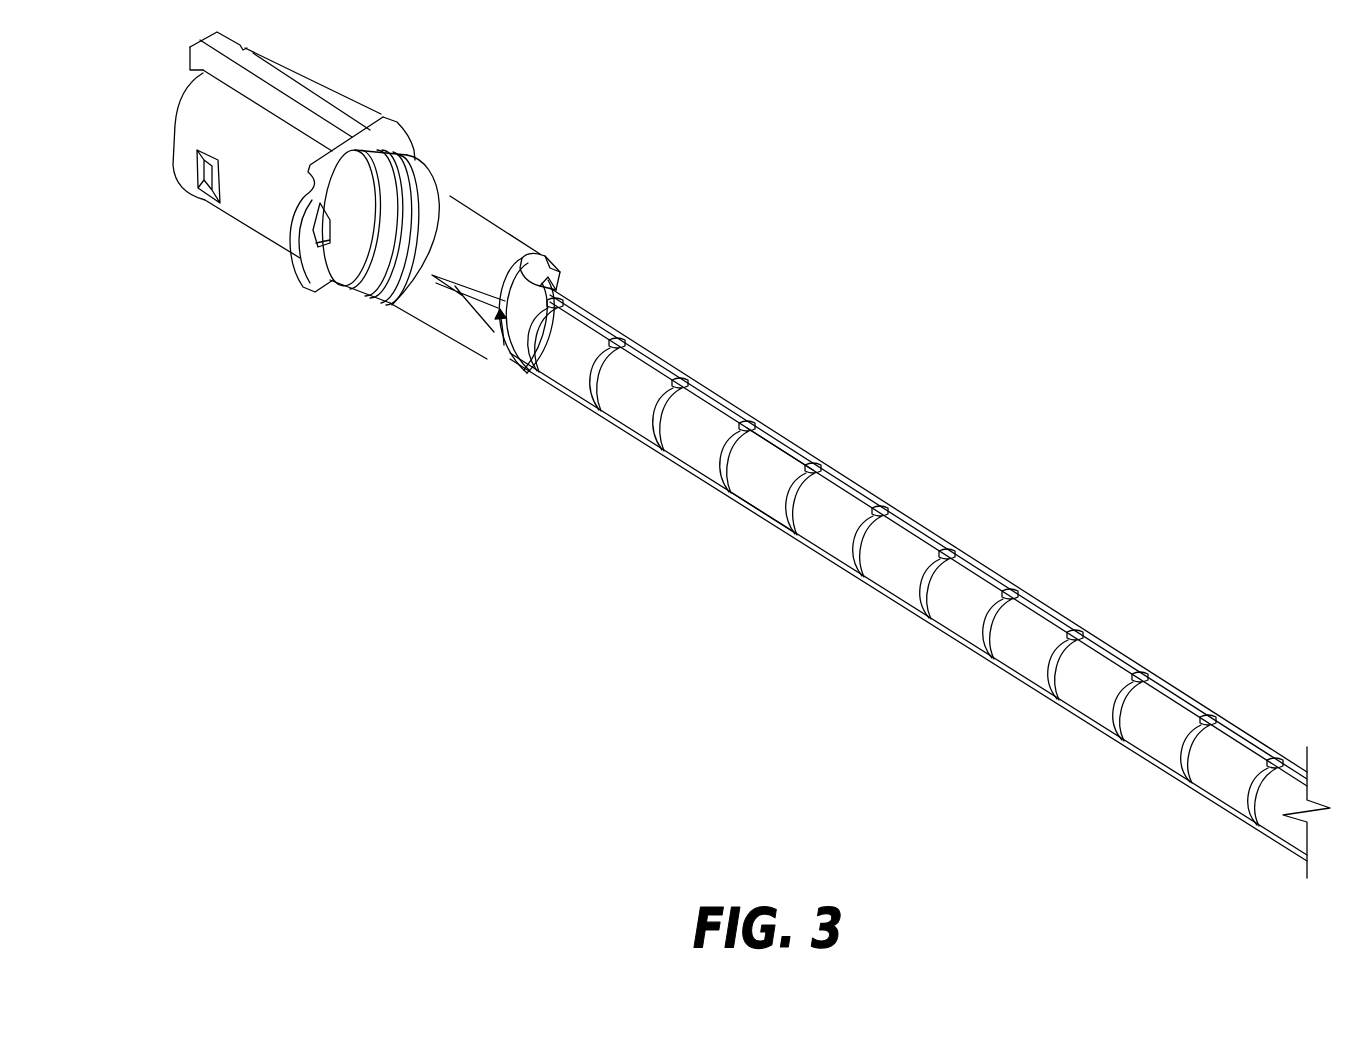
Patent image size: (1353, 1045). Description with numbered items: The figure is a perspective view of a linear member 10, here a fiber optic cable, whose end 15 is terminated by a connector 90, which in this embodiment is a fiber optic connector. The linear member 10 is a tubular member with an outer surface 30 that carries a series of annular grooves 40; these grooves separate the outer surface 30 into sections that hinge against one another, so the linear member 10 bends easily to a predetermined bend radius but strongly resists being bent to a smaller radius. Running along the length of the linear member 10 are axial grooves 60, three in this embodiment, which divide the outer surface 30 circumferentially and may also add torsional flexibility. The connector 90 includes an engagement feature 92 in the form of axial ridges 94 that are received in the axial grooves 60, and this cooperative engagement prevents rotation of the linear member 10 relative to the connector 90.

The linear member 10 is at (892, 306).
The end 15 is at (508, 357).
The outer surface 30 is at (773, 477).
The annular grooves 40 is at (793, 537).
The axial grooves 60 is at (717, 397).
The connector 90 is at (398, 134).
The engagement feature 92 is at (512, 262).
The axial ridges 94 is at (548, 268).